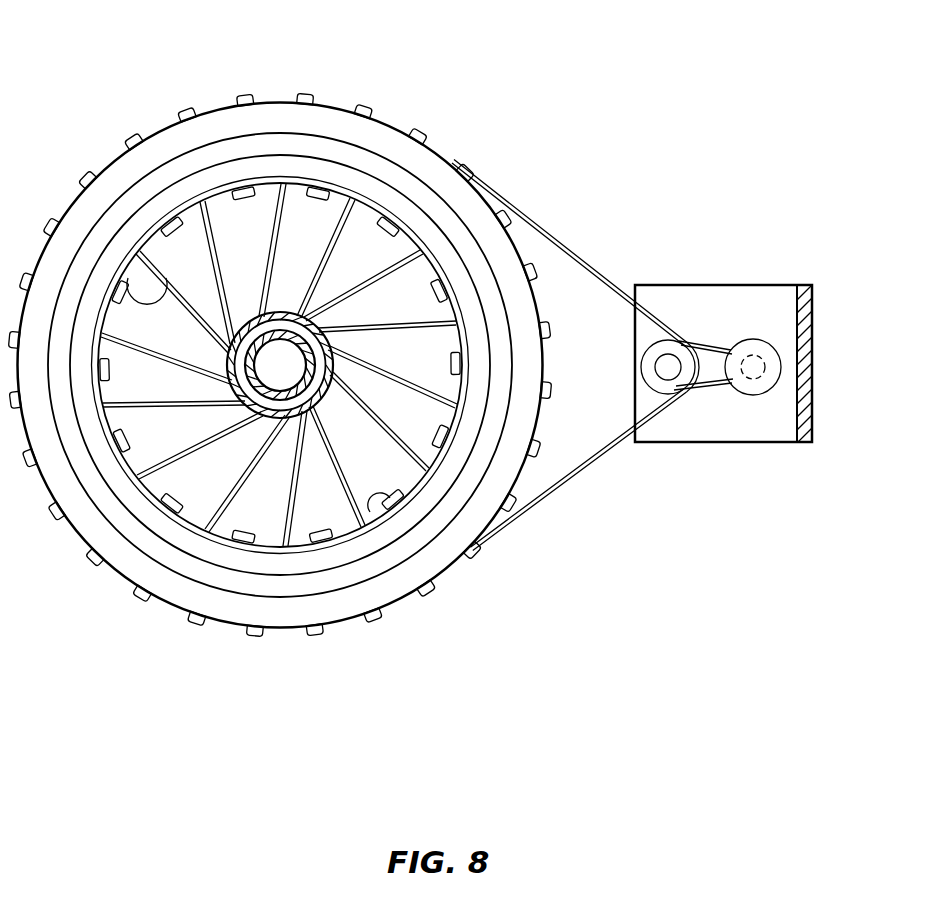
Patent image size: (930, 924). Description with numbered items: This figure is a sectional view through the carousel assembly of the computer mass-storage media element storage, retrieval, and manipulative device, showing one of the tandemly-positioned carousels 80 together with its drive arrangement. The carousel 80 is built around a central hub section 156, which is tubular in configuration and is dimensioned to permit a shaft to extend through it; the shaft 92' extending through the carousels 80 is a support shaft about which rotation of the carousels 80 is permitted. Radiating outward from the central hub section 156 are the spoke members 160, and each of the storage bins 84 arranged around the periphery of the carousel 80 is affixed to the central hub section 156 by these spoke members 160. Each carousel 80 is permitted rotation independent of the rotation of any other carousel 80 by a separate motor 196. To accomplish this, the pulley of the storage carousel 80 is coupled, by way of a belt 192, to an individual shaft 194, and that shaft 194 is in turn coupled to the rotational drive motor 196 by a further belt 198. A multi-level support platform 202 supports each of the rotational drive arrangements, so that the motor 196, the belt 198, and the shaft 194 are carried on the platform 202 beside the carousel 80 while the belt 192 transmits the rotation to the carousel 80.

The carousel 80 is at (392, 131).
The shaft 92' is at (288, 219).
The spoke member 160 is at (121, 262).
The central hub section 156 is at (304, 420).
The storage bin 84 is at (378, 495).
The belt 192 is at (552, 243).
The shaft 194 is at (653, 352).
The belt 198 is at (716, 346).
The motor 196 is at (775, 393).
The multi-level support platform 202 is at (810, 385).